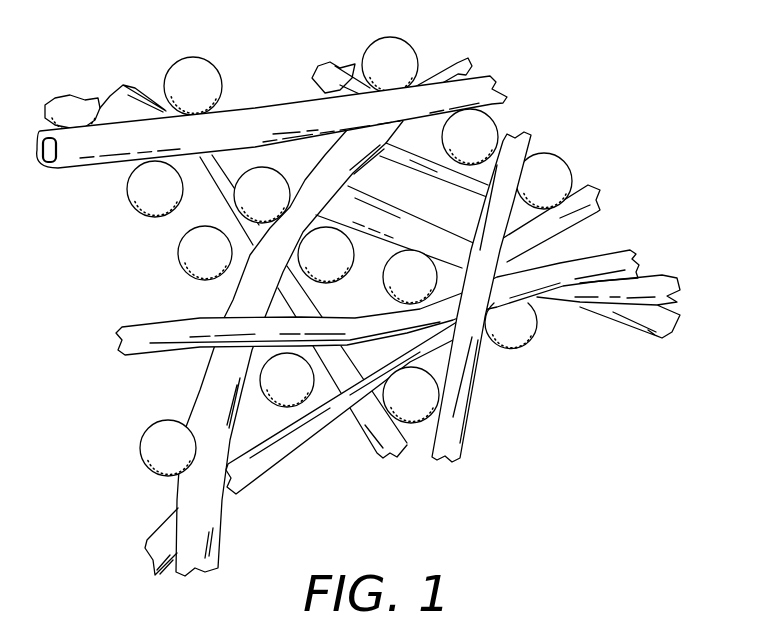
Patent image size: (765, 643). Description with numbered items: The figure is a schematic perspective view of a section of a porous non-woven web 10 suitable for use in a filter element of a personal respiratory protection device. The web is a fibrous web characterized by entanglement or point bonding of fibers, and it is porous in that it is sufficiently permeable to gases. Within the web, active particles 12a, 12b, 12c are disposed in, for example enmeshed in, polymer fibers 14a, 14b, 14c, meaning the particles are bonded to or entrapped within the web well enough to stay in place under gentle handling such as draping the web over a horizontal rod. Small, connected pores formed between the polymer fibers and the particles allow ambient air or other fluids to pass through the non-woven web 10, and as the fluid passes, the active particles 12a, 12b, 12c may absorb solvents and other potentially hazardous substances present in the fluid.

The porous non-woven web 10 is at (583, 160).
The active particle 12a is at (260, 380).
The active particle 12b is at (417, 423).
The active particle 12c is at (529, 338).
The polymer fiber 14a is at (167, 535).
The polymer fiber 14b is at (370, 433).
The polymer fiber 14c is at (620, 250).